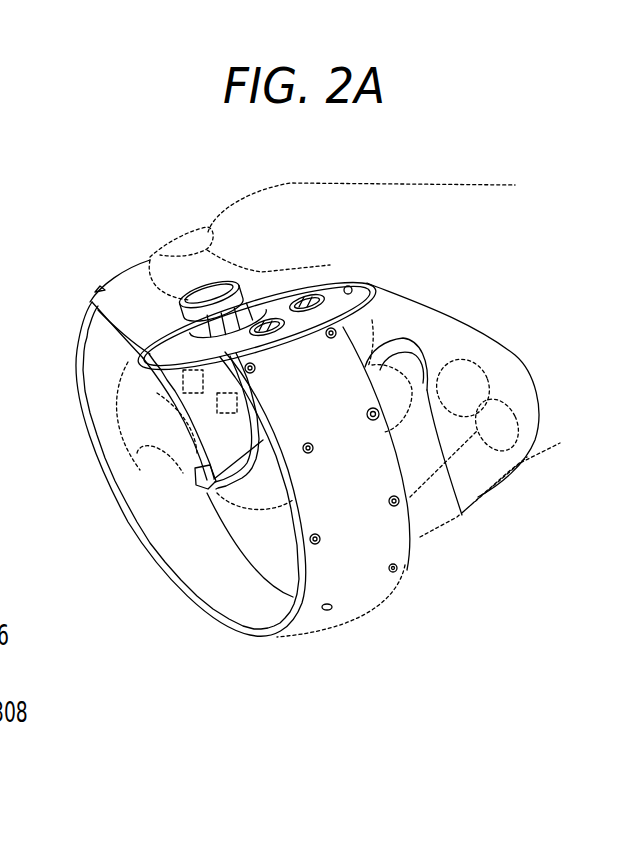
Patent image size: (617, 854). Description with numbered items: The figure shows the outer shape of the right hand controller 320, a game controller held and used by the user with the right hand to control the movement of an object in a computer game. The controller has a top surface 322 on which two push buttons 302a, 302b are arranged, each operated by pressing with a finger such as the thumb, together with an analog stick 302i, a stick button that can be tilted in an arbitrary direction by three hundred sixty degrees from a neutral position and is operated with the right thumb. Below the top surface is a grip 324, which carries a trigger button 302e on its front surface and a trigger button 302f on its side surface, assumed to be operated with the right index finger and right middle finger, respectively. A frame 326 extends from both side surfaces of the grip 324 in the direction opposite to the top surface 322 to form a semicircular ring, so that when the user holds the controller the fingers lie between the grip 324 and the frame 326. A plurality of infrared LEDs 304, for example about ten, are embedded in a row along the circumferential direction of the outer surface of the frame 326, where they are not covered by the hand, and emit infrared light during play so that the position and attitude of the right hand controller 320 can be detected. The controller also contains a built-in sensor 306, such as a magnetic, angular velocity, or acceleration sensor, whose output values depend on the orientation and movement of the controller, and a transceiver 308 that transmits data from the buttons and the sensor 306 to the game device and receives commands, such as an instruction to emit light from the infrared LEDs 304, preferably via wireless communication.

The right hand controller 320 is at (82, 215).
The analog stick 302i is at (215, 288).
The push button 302a is at (270, 320).
The push button 302b is at (328, 284).
The trigger button 302e is at (212, 490).
The trigger button 302f is at (462, 515).
The infrared light emitting diode 304 is at (379, 410).
The sensor 306 is at (197, 377).
The transceiver 308 is at (237, 413).
The top surface 322 is at (135, 342).
The grip 324 is at (470, 347).
The frame 326 is at (145, 522).